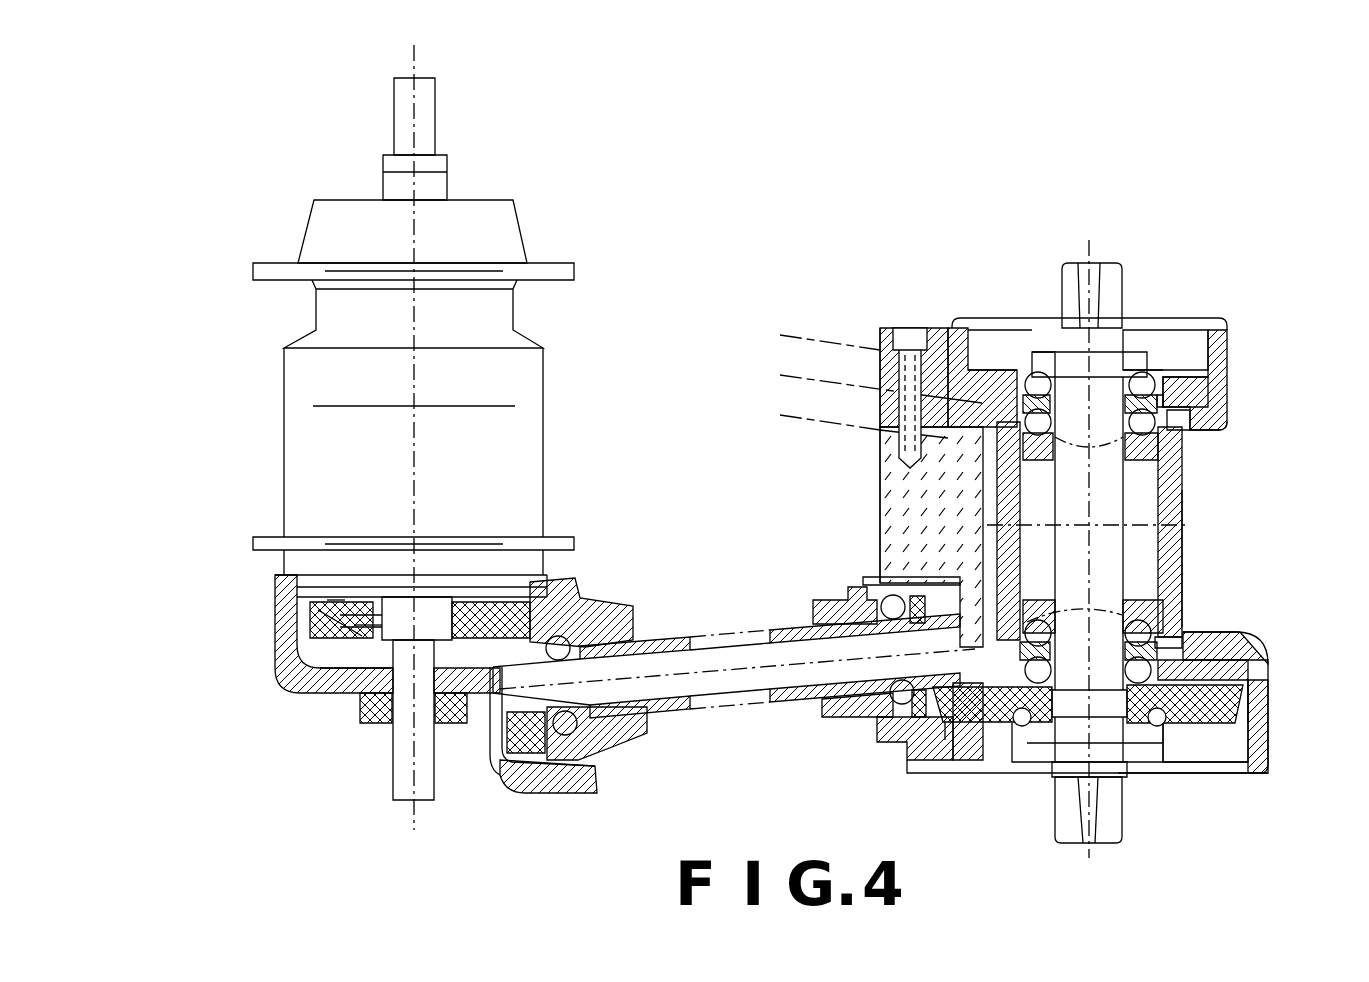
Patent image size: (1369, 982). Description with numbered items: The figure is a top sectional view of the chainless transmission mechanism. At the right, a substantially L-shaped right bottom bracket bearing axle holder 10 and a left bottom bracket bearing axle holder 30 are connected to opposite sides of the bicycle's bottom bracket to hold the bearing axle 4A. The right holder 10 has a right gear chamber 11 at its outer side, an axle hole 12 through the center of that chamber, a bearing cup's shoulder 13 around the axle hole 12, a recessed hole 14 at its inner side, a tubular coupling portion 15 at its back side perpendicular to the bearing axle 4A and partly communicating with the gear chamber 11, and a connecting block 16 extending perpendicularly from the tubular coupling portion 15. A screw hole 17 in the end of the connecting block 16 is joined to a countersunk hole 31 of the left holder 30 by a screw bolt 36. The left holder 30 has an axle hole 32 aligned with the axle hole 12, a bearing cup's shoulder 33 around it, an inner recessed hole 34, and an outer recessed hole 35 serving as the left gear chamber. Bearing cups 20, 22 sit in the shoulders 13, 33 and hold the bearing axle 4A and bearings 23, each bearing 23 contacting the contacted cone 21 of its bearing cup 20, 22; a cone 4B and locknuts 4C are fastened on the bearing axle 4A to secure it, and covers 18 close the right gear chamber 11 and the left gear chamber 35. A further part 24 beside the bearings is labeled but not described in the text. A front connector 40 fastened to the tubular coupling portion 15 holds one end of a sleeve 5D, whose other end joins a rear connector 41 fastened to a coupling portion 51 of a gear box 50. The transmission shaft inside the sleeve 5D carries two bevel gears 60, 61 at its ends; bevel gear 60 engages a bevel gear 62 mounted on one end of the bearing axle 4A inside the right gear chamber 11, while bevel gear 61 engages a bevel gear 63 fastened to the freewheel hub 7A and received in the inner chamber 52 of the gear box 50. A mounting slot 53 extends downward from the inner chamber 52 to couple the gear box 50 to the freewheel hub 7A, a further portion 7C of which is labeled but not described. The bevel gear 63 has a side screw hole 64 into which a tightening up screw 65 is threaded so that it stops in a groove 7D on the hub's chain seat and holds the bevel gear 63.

The freewheel hub 7A is at (300, 445).
The motor shaft 7C is at (365, 725).
The groove 7D is at (379, 640).
The bevel gear 63 is at (327, 600).
The tightening up screw 65 is at (360, 625).
The side screw hole 64 is at (300, 618).
The inner chamber 52 is at (330, 656).
The gear box 50 is at (295, 680).
The mounting slot 53 is at (360, 700).
The bevel gear 61 is at (495, 760).
The coupling portion 51 is at (512, 790).
The rear connector 41 is at (605, 588).
The sleeve 5D is at (655, 637).
The front connector 40 is at (830, 603).
The tubular coupling portion 15 is at (880, 582).
The bevel gear 60 is at (875, 715).
The connecting block 16 is at (880, 500).
The screw hole 17 is at (880, 455).
The countersunk hole 31 is at (928, 327).
The screw bolt 36 is at (903, 350).
The cover 18 is at (1228, 326).
The left bottom bracket bearing axle holder 30 is at (1225, 352).
The outer recessed hole 35 is at (1192, 335).
The bearing cup's shoulder 33 is at (1165, 387).
The axle hole 32 is at (1160, 403).
The inner recessed hole 34 is at (1198, 432).
The bearing cup 22 is at (1172, 413).
The bearing axle 4A is at (1122, 303).
The cone 4B is at (1043, 365).
The locknuts 4C is at (1106, 315).
The bearing cup 20 is at (1152, 387).
The contacted cone 21 is at (1107, 390).
The bearing 23 is at (1183, 450).
The carrier wall 24 is at (1178, 627).
The right bottom bracket bearing axle holder 10 is at (1258, 752).
The axle hole 12 is at (1268, 660).
The bearing cup's shoulder 13 is at (1250, 678).
The right gear chamber 11 is at (1210, 745).
The recessed hole 14 is at (993, 722).
The bevel gear 62 is at (952, 722).